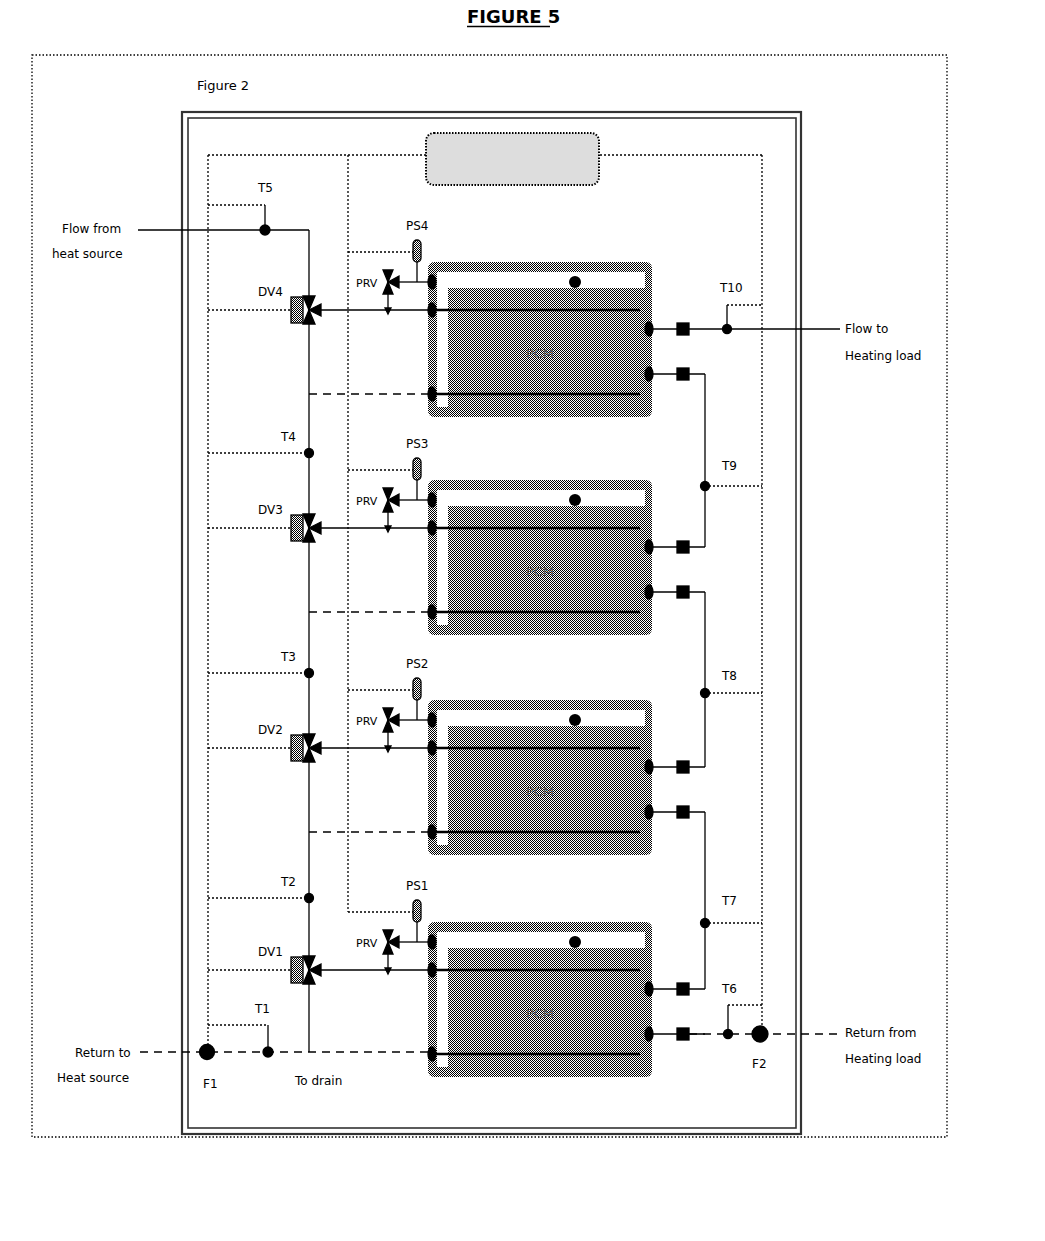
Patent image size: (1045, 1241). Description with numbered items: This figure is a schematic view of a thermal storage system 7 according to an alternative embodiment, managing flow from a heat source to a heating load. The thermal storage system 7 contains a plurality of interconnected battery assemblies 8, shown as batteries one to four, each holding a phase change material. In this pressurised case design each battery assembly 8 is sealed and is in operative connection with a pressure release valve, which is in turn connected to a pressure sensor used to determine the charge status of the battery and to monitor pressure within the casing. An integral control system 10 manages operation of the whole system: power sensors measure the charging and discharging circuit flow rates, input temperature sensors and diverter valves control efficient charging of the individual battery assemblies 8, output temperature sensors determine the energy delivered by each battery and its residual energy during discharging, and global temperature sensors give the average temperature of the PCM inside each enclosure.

The thermal storage system 7 is at (491, 603).
The battery assemblies 8 is at (542, 653).
The integral control system 10 is at (526, 159).